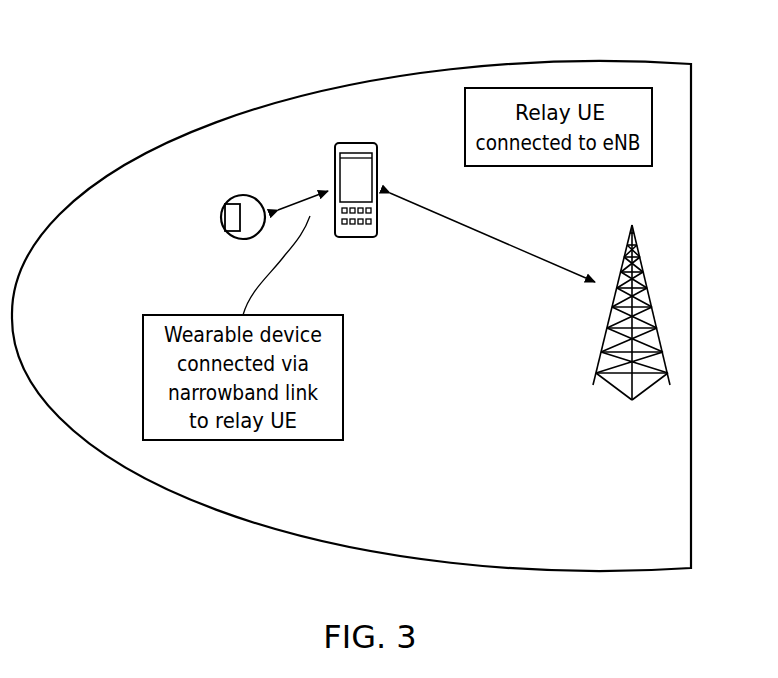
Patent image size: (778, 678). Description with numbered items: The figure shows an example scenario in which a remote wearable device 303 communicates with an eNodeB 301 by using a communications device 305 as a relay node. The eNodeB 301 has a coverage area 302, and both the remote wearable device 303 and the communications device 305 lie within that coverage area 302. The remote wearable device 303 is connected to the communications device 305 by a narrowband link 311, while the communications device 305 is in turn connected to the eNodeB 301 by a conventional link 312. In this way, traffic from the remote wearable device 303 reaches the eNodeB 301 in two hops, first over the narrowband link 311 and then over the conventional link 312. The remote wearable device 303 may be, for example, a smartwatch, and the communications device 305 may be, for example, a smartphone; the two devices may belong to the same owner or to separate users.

The eNodeB 301 is at (658, 305).
The coverage area 302 is at (620, 64).
The remote wearable device 303 is at (218, 221).
The communications device 305 is at (352, 237).
The narrowband link 311 is at (308, 196).
The conventional link 312 is at (560, 166).